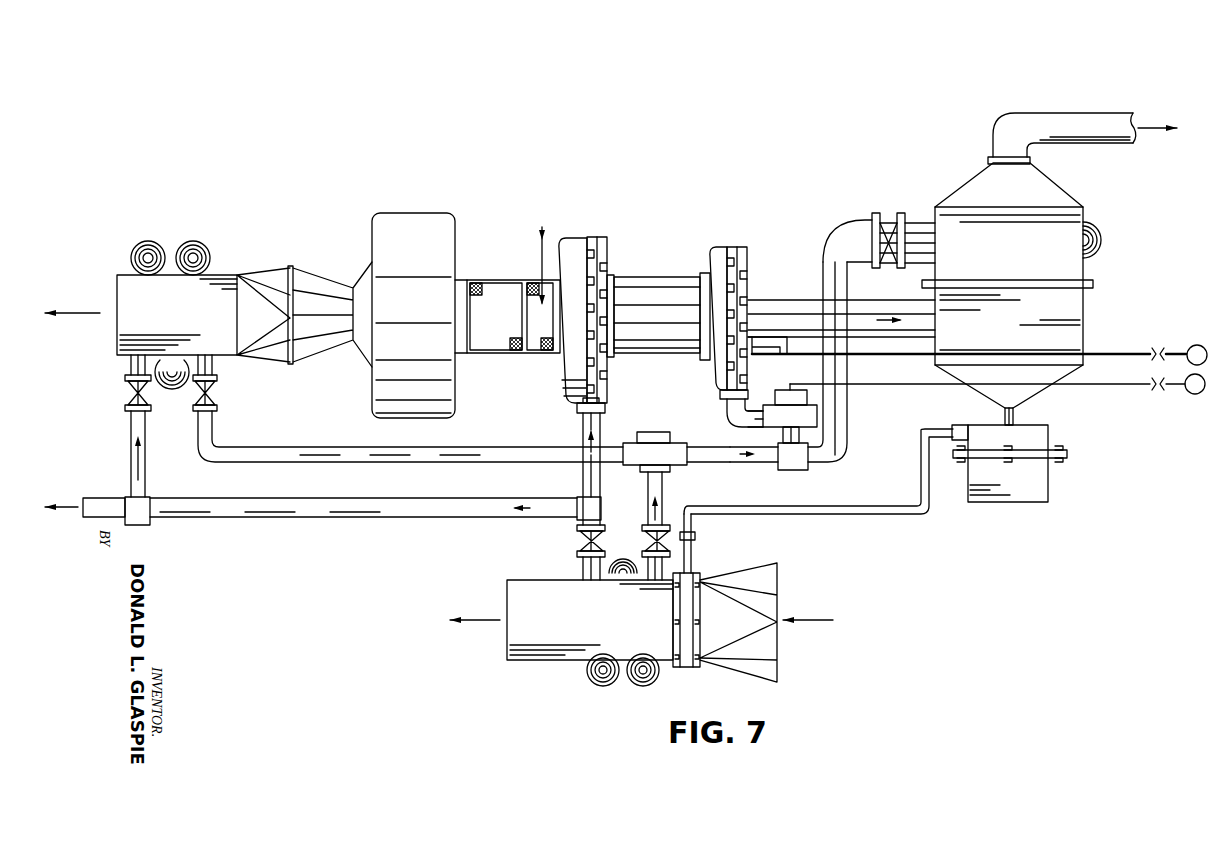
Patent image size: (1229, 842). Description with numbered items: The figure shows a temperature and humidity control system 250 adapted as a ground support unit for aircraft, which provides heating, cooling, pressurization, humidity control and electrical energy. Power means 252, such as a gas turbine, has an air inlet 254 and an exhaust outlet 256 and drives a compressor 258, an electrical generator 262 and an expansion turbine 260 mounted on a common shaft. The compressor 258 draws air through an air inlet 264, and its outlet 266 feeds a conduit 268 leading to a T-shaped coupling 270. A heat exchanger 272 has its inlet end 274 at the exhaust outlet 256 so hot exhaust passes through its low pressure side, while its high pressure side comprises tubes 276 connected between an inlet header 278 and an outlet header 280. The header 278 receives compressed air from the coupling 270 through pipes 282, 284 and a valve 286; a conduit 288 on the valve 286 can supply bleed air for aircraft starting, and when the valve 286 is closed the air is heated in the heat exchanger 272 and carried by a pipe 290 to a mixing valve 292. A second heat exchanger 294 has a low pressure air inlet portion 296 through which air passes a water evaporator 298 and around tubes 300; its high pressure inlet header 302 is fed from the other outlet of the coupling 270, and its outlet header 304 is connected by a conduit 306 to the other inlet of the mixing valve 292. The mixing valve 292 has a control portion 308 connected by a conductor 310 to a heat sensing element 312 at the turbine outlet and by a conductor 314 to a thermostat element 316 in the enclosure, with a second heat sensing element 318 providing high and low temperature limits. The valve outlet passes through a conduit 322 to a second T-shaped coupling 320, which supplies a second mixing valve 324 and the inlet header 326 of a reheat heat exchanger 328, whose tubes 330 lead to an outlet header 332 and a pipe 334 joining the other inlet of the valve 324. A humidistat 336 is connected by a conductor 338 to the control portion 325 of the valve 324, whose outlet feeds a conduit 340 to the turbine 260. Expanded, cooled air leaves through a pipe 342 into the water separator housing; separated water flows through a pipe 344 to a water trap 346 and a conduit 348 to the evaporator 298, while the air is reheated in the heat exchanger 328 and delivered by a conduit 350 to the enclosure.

The system 250 is at (928, 556).
The power means 252 is at (420, 222).
The air inlet 254 is at (495, 296).
The outlet 256 is at (333, 293).
The compressor 258 is at (592, 237).
The expansion turbine 260 is at (770, 225).
The electrical generator 262 is at (676, 295).
The air inlet 264 is at (539, 283).
The outlet 266 is at (575, 407).
The conduit 268 is at (582, 438).
The T-shaped coupling 270 is at (578, 498).
The heat exchanger 272 is at (130, 333).
The inlet end 274 is at (254, 356).
The tubes 276 is at (183, 250).
The high pressure inlet header 278 is at (128, 400).
The high pressure outlet header 280 is at (216, 398).
The pipe 282 is at (146, 470).
The pipe 284 is at (370, 500).
The valve 286 is at (150, 510).
The conduit 288 is at (118, 502).
The pipe 290 is at (325, 447).
The mixing valve 292 is at (676, 465).
The second heat exchanger 294 is at (575, 648).
The low pressure air inlet portion 296 is at (768, 645).
The water evaporator 298 is at (693, 632).
The tubes 300 is at (612, 572).
The high pressure air inlet header 302 is at (585, 545).
The high pressure air outlet header 304 is at (695, 537).
The conduit 306 is at (665, 500).
The control portion 308 is at (632, 447).
The conductor 310 is at (723, 425).
The heat sensing element 312 is at (752, 330).
The conductor 314 is at (1105, 354).
The thermostat element 316 is at (1200, 341).
The second heat sensing element 318 is at (799, 327).
The second T-shaped coupling 320 is at (792, 470).
The conduit 322 is at (762, 463).
The second mixing valve 324 is at (818, 415).
The control portion 325 is at (783, 398).
The inlet header 326 is at (890, 222).
The reheat heat exchanger 328 is at (975, 195).
The tubes 330 is at (930, 225).
The outlet header 332 is at (905, 268).
The pipe 334 is at (823, 265).
The humidistat 336 is at (1193, 395).
The conductor 338 is at (1123, 384).
The conduit 340 is at (738, 420).
The pipe 342 is at (808, 300).
The pipe 344 is at (1003, 415).
The water trap 346 is at (1040, 478).
The conduit 348 is at (932, 512).
The conduit 350 is at (1073, 125).